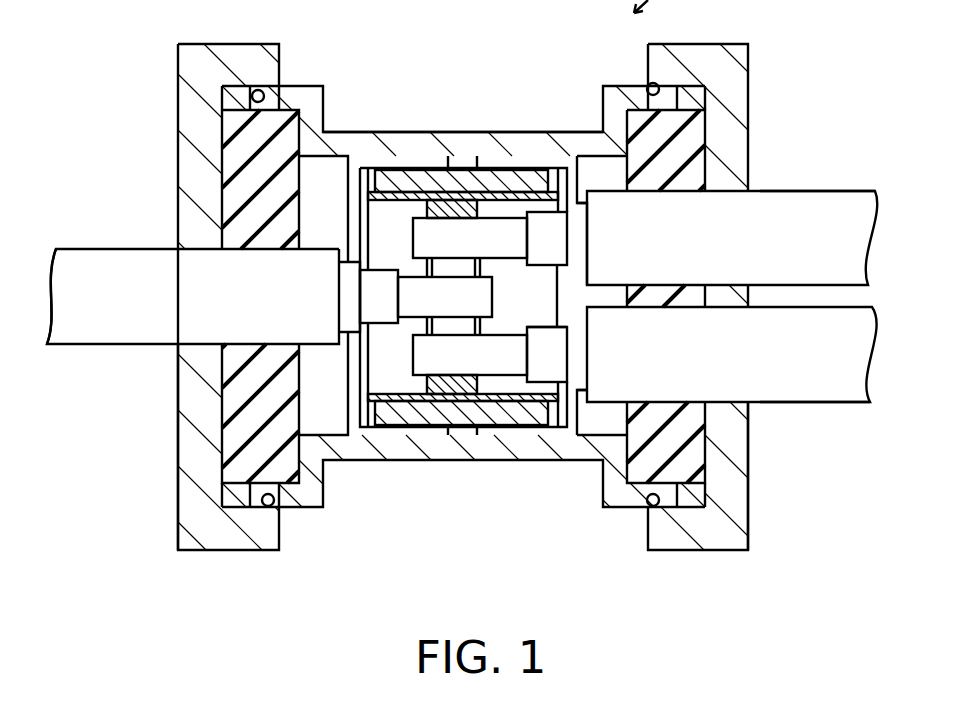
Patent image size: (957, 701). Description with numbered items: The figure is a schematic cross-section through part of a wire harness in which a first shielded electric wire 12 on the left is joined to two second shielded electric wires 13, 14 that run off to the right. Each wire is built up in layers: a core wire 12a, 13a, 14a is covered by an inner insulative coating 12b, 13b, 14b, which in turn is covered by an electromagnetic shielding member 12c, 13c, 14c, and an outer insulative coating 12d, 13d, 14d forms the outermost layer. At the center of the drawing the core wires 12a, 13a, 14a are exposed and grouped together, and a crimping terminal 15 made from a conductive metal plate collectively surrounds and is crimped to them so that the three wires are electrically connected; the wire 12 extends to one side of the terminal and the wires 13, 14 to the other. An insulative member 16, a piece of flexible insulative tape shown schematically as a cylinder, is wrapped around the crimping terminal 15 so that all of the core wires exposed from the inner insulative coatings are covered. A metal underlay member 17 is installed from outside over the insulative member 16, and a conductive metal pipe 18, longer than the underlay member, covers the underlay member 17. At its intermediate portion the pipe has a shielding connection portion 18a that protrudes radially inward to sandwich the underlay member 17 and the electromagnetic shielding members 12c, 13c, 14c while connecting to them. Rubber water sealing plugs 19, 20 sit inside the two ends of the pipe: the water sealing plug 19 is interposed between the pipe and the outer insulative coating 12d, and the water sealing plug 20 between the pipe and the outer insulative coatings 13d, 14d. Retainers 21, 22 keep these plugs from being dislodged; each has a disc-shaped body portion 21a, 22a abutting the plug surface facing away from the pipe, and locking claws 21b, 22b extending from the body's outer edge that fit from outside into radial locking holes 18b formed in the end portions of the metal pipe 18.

The first shielded electric wire 12 is at (105, 248).
The core wire 12a is at (484, 298).
The inner insulative coating 12b is at (362, 300).
The electromagnetic shielding member 12c is at (340, 269).
The outer insulative coating 12d is at (107, 345).
The second shielded electric wire 13 is at (851, 198).
The core wire 13a is at (447, 260).
The inner insulative coating 13b is at (578, 256).
The electromagnetic shielding member 13c is at (593, 222).
The outer insulative coating 13d is at (806, 199).
The second shielded electric wire 14 is at (852, 404).
The core wire 14a is at (422, 350).
The inner insulative coating 14b is at (580, 337).
The electromagnetic shielding member 14c is at (580, 370).
The outer insulative coating 14d is at (790, 404).
The crimping terminal 15 is at (422, 378).
The insulative member 16 is at (405, 402).
The underlay member 17 is at (430, 422).
The metal pipe 18 is at (319, 87).
The shielding connection portion 18a is at (487, 133).
The locking hole 18b is at (265, 95).
The water sealing plug 19 is at (226, 166).
The water sealing plug 20 is at (695, 138).
The retainer 21 is at (178, 68).
The body portion 21a is at (178, 446).
The locking claw 21b is at (240, 100).
The retainer 22 is at (748, 58).
The body portion 22a is at (740, 490).
The locking claw 22b is at (700, 100).